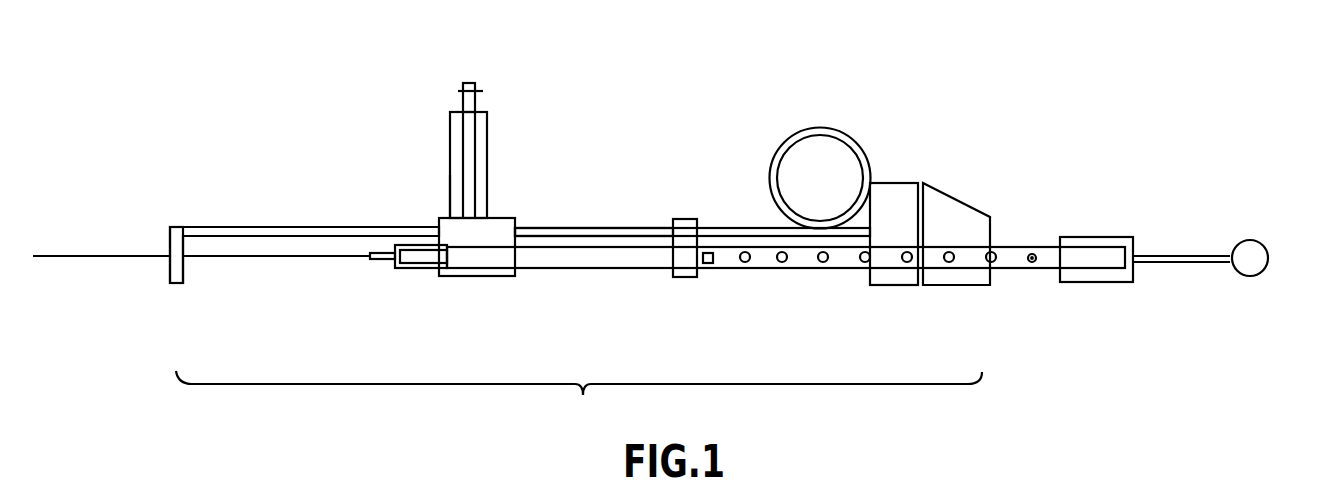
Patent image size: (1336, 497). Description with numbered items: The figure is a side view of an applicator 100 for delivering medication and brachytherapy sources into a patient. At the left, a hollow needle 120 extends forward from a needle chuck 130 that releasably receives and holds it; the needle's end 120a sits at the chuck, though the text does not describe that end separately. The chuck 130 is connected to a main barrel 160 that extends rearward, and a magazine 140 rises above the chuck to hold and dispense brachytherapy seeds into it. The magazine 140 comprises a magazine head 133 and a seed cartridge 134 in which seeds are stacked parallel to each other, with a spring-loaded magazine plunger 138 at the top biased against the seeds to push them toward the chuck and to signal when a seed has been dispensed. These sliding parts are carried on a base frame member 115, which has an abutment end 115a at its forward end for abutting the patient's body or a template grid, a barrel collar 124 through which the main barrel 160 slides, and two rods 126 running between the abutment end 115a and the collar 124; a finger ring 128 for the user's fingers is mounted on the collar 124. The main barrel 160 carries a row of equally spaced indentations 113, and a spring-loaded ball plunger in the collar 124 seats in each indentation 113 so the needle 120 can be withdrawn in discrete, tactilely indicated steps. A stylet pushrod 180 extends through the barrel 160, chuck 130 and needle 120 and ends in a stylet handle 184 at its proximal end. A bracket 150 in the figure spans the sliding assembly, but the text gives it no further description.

The applicator 100 is at (1013, 91).
The indentation 113 is at (1037, 262).
The base frame member 115 is at (222, 227).
The abutment end 115a is at (170, 228).
The hollow needle 120 is at (258, 258).
The rod end 120a is at (370, 258).
The barrel collar 124 is at (690, 218).
The rods 126 is at (562, 228).
The finger ring 128 is at (851, 138).
The needle chuck 130 is at (458, 272).
The magazine head 133 is at (450, 163).
The seed cartridge 134 is at (450, 192).
The magazine plunger 138 is at (467, 84).
The magazine 140 is at (500, 100).
The assembly 150 is at (579, 401).
The main barrel 160 is at (762, 270).
The stylet pushrod 180 is at (1182, 264).
The stylet handle 184 is at (1262, 242).